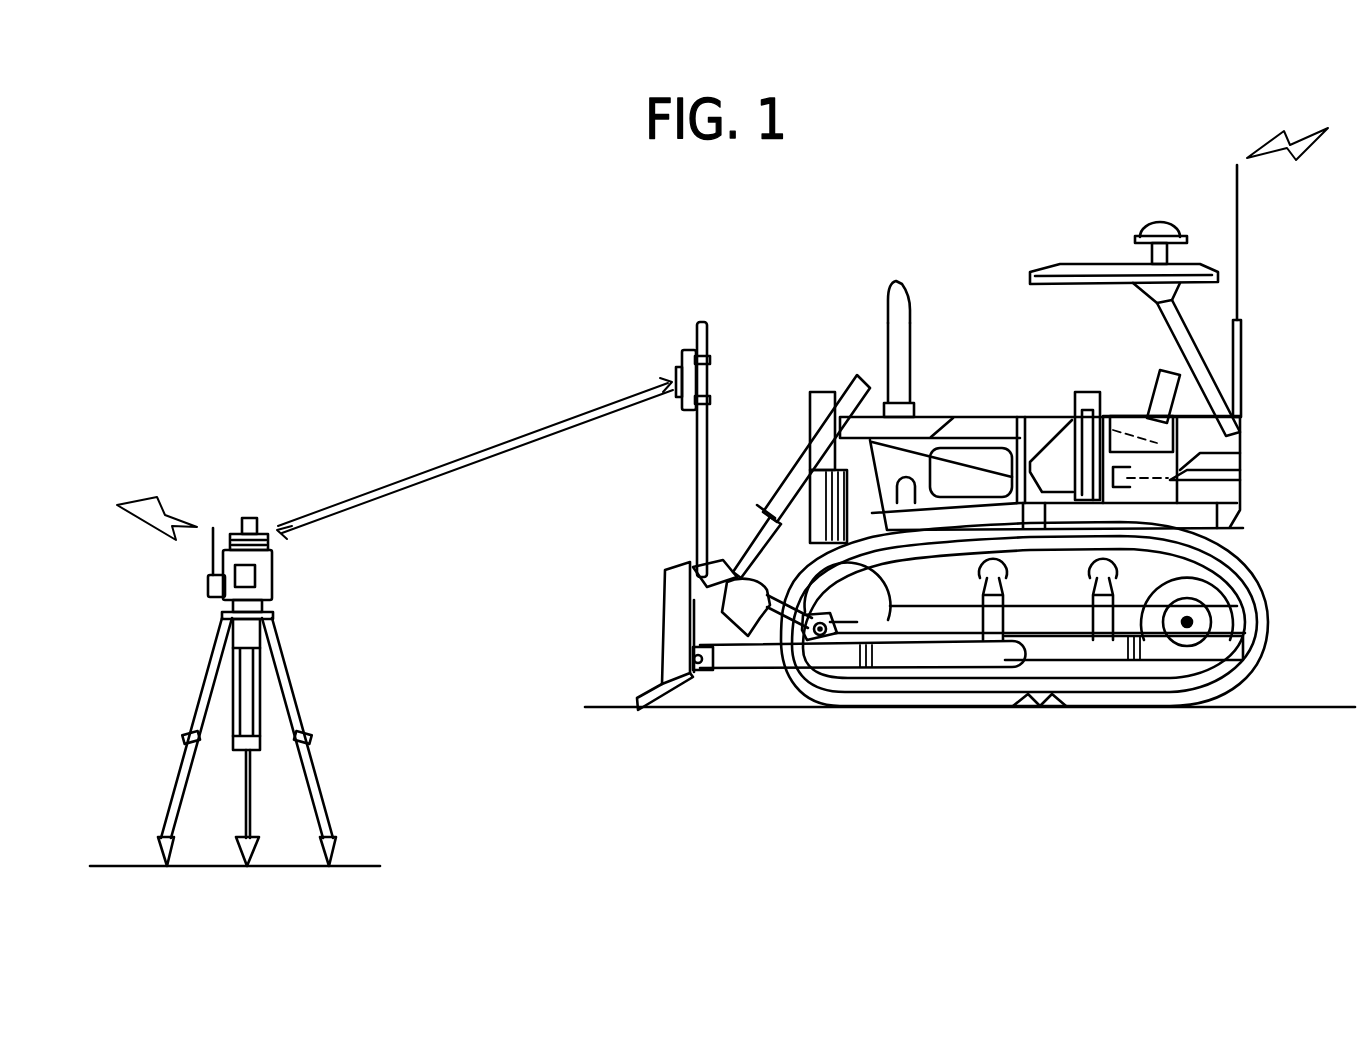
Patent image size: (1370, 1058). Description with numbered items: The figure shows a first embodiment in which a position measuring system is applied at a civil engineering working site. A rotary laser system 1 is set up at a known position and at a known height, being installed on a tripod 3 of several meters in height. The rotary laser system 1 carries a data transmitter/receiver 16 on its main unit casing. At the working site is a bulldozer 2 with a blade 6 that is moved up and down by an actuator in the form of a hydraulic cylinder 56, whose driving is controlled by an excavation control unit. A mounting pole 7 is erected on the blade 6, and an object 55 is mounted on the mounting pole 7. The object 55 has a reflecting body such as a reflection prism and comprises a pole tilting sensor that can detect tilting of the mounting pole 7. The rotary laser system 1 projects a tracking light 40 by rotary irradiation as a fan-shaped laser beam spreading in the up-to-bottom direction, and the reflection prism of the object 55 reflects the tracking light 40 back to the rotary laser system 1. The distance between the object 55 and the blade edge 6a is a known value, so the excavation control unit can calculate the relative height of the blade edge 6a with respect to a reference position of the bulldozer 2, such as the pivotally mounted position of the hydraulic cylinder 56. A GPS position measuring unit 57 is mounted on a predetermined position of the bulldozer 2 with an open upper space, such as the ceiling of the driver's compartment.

The rotary laser system 1 is at (324, 586).
The bulldozer 2 is at (1000, 366).
The tripod 3 is at (197, 702).
The blade 6 is at (665, 565).
The blade edge 6a is at (638, 712).
The mounting pole 7 is at (695, 468).
The data transmitter/receiver 16 is at (205, 585).
The tracking light 40 is at (450, 458).
The object 55 is at (680, 355).
The hydraulic cylinder 56 is at (790, 480).
The GPS position measuring unit 57 is at (1160, 222).